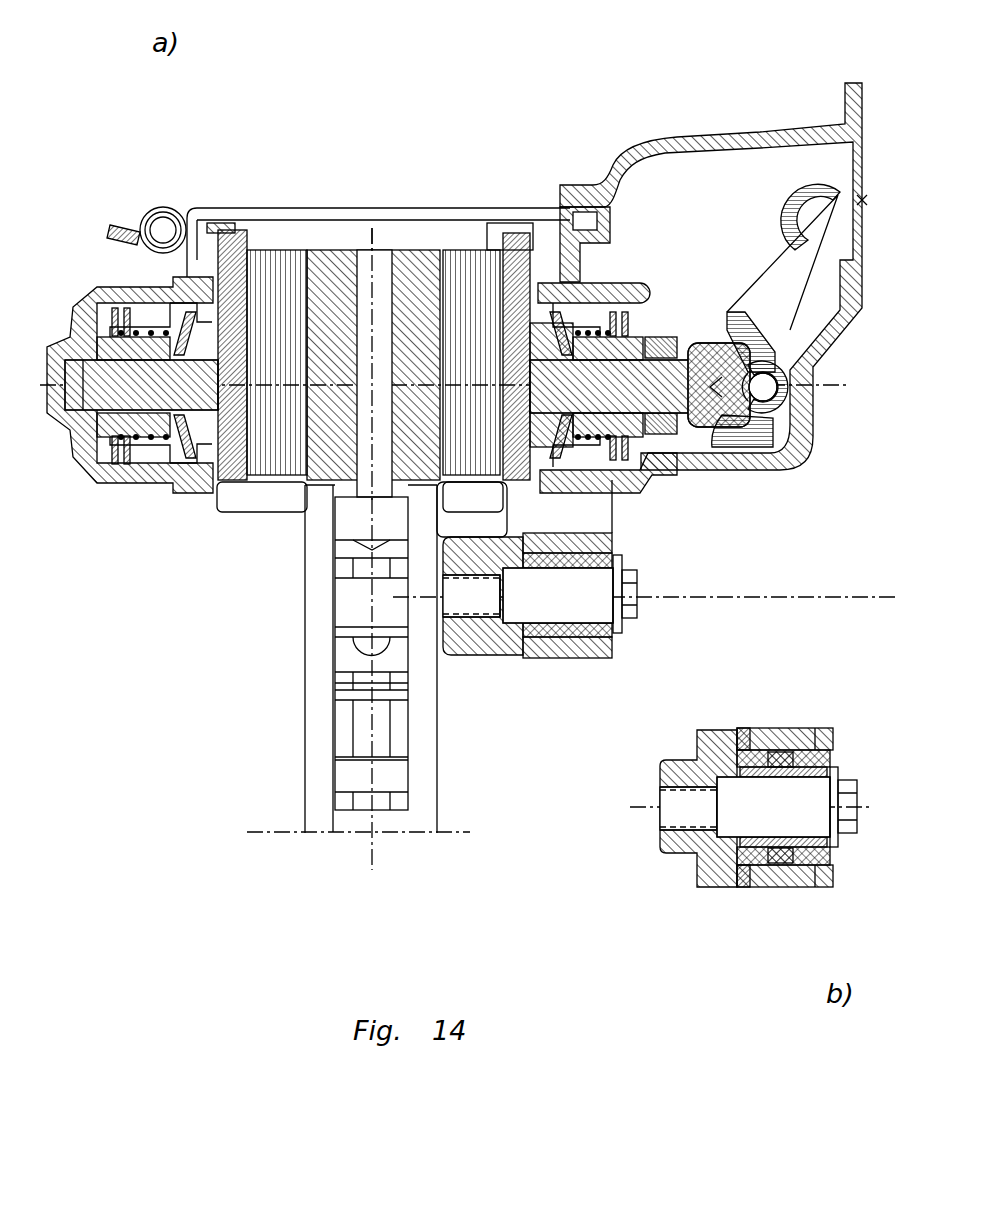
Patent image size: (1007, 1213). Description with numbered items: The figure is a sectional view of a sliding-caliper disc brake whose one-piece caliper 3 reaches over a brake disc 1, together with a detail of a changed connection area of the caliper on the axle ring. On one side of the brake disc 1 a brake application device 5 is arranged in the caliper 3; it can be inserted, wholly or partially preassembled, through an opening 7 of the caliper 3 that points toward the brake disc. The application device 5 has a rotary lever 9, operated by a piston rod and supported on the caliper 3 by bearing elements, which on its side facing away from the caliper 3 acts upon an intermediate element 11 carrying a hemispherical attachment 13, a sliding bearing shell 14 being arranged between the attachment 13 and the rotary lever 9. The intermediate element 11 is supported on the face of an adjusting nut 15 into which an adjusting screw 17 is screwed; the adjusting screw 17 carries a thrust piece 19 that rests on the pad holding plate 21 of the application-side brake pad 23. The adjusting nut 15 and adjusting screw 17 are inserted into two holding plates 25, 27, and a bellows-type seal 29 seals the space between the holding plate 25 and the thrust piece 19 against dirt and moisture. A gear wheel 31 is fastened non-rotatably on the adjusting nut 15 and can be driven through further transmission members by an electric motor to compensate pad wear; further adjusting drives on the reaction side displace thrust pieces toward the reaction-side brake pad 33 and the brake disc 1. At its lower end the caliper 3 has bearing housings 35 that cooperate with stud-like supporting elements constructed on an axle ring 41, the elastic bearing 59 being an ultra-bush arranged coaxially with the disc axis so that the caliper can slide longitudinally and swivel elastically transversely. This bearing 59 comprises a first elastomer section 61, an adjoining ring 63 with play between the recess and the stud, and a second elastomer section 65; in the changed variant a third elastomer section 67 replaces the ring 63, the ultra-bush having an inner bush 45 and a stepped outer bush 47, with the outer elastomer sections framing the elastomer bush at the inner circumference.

The brake disc 1 is at (335, 258).
The caliper 3 is at (711, 130).
The brake application device 5 is at (700, 198).
The opening 7 is at (537, 238).
The rotary lever 9 is at (773, 257).
The intermediate element 11 is at (687, 432).
The hemispherical attachment 13 is at (757, 400).
The sliding bearing shell 14 is at (780, 370).
The adjusting nut 15 is at (638, 474).
The adjusting screw 17 is at (659, 383).
The thrust piece 19 is at (508, 238).
The pad holding plate 21 is at (268, 240).
The application-side brake pad 23 is at (450, 250).
The holding plate 25 is at (628, 300).
The holding plate 27 is at (203, 238).
The bellows-type seal 29 is at (160, 300).
The gear wheel 31 is at (107, 290).
The brake pad 33 is at (288, 250).
The bearing housing 35 is at (570, 637).
The axle ring 41 is at (470, 632).
The inner bush 45 is at (810, 880).
The outer bush 47 is at (750, 873).
The elastic bearing 59 is at (850, 757).
The first elastomer section 61 is at (603, 637).
The ring 63 is at (557, 660).
The second elastomer section 65 is at (543, 547).
The third elastomer section 67 is at (773, 740).